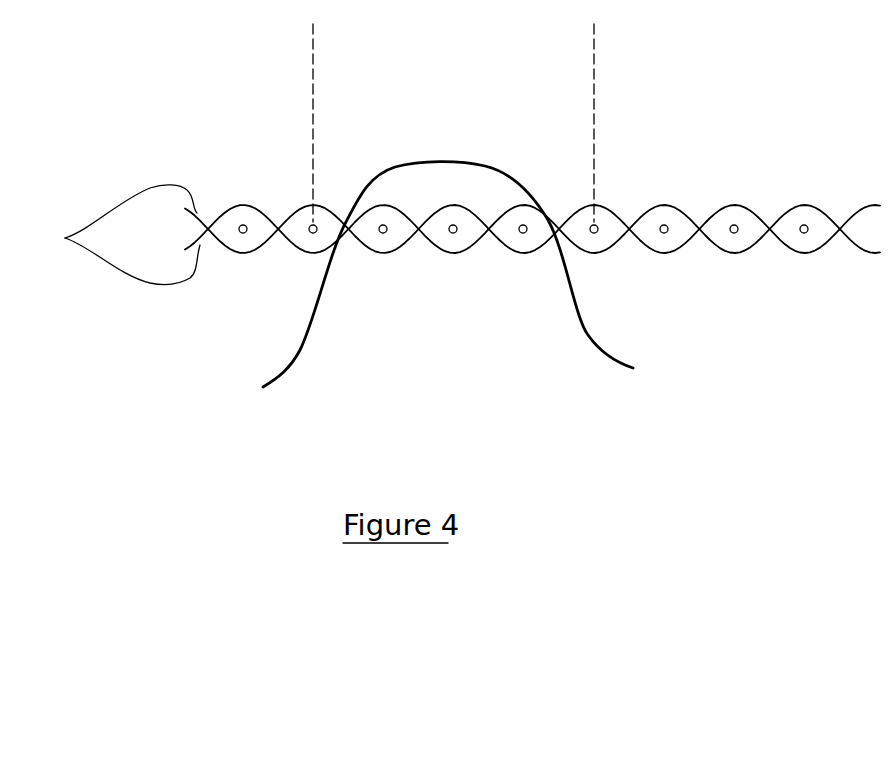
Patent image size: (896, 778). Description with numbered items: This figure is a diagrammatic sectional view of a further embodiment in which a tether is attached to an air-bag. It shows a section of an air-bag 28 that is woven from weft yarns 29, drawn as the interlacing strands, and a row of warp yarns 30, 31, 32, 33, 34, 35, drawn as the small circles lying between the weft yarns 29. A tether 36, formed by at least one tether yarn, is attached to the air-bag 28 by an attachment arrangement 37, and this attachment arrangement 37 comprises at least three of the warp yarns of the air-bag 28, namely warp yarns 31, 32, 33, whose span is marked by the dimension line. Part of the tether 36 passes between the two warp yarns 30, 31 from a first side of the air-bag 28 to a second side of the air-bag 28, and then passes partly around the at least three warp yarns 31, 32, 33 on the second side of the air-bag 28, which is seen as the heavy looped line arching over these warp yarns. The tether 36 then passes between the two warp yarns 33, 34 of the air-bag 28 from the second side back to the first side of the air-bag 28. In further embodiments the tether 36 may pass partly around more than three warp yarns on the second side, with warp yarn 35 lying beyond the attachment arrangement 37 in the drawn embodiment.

The air-bag 28 is at (445, 397).
The weft yarns 29 is at (65, 238).
The warp yarn 30 is at (310, 224).
The warp yarn 31 is at (382, 234).
The warp yarn 32 is at (452, 234).
The warp yarn 33 is at (522, 234).
The warp yarn 34 is at (597, 223).
The warp yarn 35 is at (666, 235).
The tether 36 is at (290, 367).
The attachment arrangement 37 is at (594, 32).